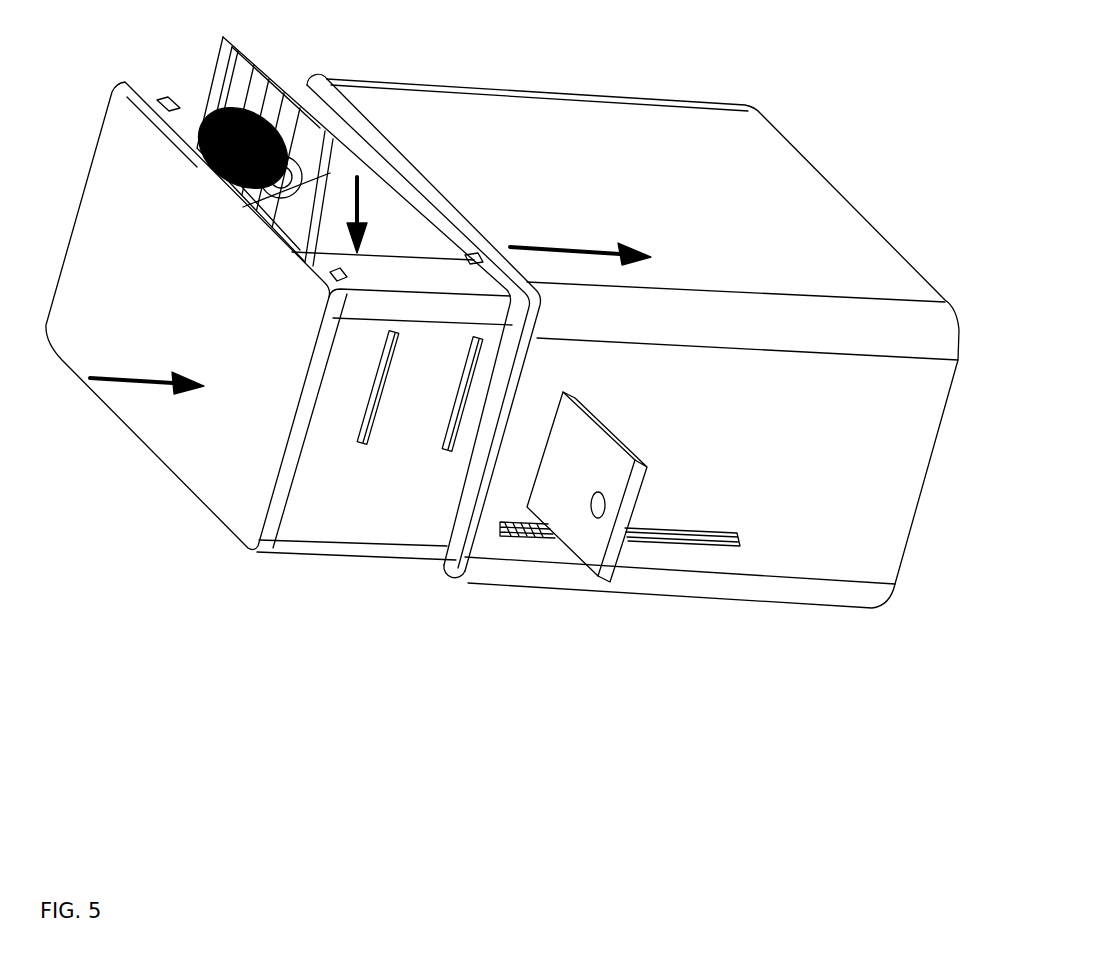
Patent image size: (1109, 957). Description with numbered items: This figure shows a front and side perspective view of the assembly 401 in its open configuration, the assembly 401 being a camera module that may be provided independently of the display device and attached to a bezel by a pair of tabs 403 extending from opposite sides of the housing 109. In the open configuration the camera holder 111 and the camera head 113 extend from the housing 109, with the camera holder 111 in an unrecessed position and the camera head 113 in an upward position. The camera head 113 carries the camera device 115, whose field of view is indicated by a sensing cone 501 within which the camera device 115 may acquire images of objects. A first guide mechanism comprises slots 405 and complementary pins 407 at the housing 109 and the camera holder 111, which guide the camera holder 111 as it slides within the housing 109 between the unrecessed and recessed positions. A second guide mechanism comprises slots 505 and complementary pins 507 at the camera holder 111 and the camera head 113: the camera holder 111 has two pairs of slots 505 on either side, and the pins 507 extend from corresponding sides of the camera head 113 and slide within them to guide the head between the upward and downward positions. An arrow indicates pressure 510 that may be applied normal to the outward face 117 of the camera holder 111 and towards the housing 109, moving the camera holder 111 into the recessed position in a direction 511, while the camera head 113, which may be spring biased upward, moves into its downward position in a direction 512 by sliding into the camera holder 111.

The housing 109 is at (793, 172).
The camera holder 111 is at (357, 543).
The camera head 113 is at (220, 47).
The camera device 115 is at (243, 207).
The outward face 117 is at (229, 327).
The assembly 401 is at (206, 684).
The tabs 403 is at (630, 455).
The slots 405 is at (737, 543).
The pins 407 is at (513, 526).
The sensing cone 501 is at (203, 170).
The slots 505 is at (443, 453).
The pins 507 is at (390, 337).
The pressure 510 is at (165, 387).
The direction 511 is at (607, 244).
The direction 512 is at (365, 230).